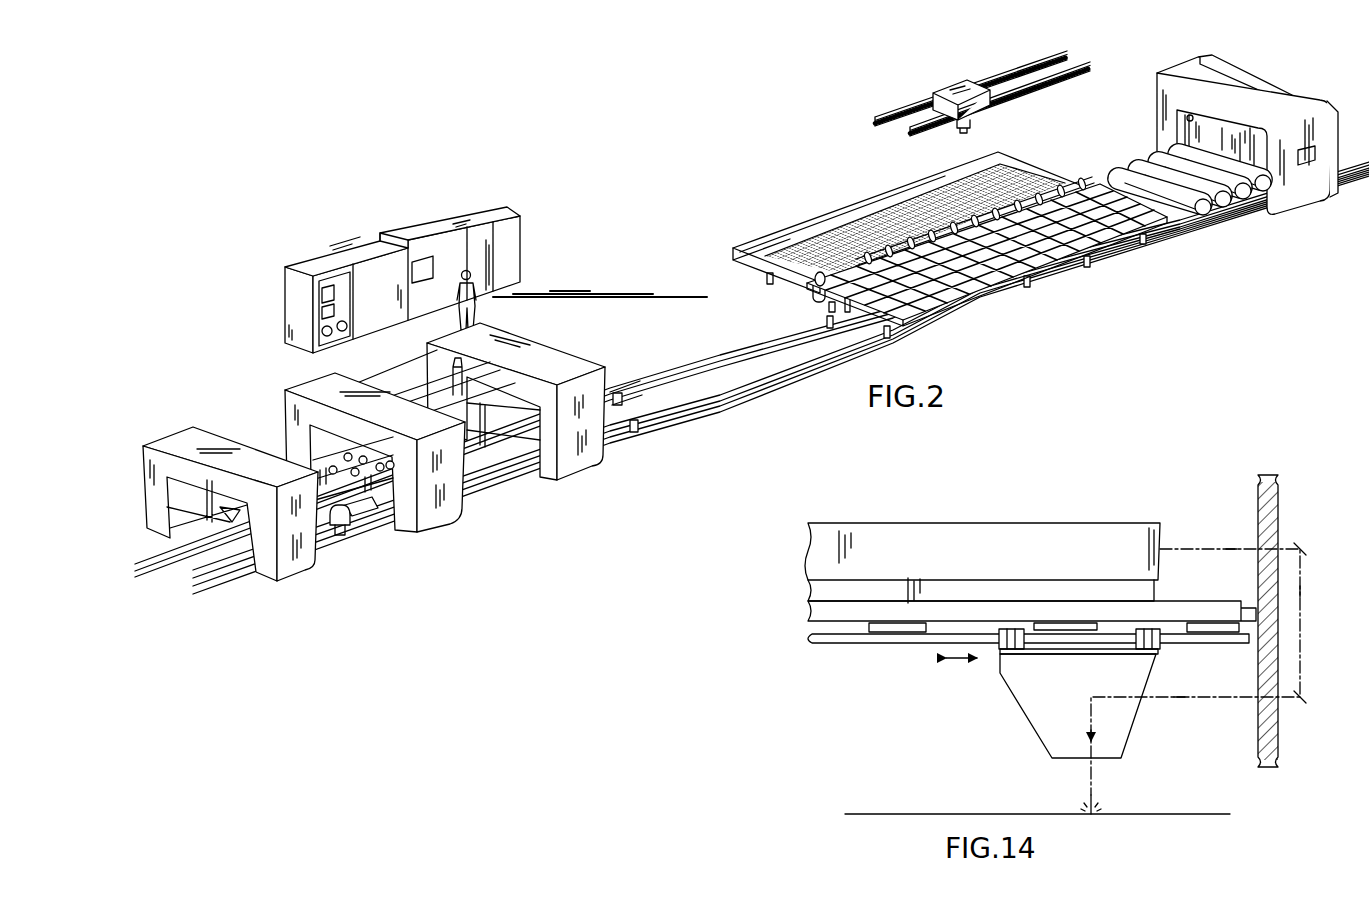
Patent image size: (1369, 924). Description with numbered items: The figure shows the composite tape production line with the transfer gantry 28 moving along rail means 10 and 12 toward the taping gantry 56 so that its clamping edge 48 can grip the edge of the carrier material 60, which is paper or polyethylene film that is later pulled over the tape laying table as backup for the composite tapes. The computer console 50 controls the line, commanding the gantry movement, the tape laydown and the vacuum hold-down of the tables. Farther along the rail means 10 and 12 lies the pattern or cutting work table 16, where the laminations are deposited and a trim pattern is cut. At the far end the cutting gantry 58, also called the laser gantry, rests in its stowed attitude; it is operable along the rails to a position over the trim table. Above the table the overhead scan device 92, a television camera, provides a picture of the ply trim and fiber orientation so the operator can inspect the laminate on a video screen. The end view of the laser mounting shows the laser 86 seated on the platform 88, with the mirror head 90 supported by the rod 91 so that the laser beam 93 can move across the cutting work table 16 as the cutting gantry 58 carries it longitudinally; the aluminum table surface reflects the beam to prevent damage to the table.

In FIG. 2, the rail means 10 is at (727, 351).
In FIG. 2, the rail means 12 is at (763, 382).
In FIG. 2, the pattern or cutting work table 16 is at (1098, 237).
In FIG. 2, the transfer gantry 28 is at (563, 349).
In FIG. 2, the clamping edge 48 is at (363, 508).
In FIG. 2, the computer console 50 is at (401, 232).
In FIG. 2, the taping gantry 56 is at (183, 431).
In FIG. 2, the cutting gantry 58 is at (1286, 44).
In FIG. 2, the carrier material 60 is at (352, 510).
In FIG. 14, the laser 86 is at (1023, 530).
In FIG. 14, the platform 88 is at (808, 610).
In FIG. 14, the mirror head 90 is at (1034, 704).
In FIG. 14, the rod 91 is at (904, 640).
In FIG. 2, the overhead scan device 92 is at (955, 70).
In FIG. 14, the laser beam 93 is at (1097, 788).